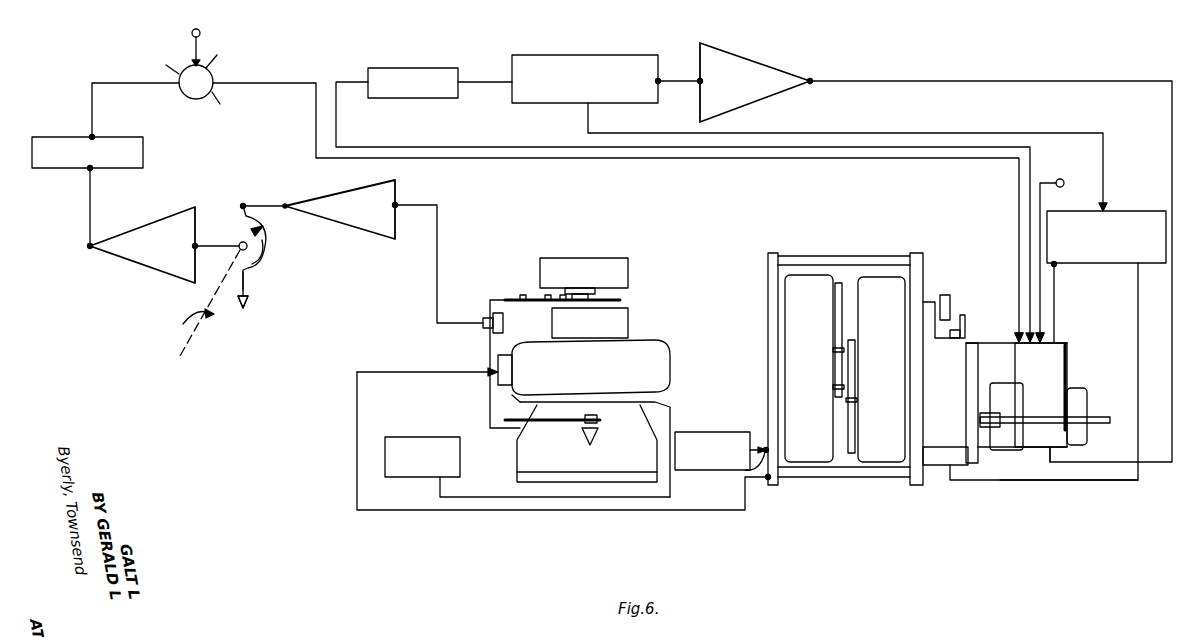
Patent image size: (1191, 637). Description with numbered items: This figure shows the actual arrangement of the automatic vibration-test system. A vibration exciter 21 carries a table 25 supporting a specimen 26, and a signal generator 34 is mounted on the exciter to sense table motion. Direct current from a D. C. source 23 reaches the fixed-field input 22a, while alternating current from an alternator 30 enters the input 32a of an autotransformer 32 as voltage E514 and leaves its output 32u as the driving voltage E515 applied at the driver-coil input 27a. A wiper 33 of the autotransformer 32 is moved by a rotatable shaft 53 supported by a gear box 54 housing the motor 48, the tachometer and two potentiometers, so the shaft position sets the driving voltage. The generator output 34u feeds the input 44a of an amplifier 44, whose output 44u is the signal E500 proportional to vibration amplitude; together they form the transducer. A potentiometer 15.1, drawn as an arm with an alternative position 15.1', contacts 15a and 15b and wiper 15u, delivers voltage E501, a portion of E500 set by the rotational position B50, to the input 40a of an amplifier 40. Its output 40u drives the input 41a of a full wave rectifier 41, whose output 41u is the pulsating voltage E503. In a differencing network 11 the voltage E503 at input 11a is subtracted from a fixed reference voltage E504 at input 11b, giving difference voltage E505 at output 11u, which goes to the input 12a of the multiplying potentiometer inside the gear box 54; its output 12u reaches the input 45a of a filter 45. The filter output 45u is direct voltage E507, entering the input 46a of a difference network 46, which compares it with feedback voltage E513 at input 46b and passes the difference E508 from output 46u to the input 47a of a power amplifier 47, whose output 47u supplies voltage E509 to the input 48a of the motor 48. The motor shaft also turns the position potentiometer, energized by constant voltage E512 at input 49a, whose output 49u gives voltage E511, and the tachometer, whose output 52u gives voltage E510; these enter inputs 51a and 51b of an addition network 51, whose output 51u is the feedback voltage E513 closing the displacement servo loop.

The differencing network 11 is at (190, 99).
The mixer input 11a is at (163, 64).
The mixer reference input 11b is at (221, 52).
The mixer output 11u is at (227, 105).
The full wave rectifier 41 is at (70, 170).
The rectifier input 41u is at (94, 135).
The rectifier output 41a is at (92, 170).
The amplifier 40 is at (140, 266).
The amplifier input 40u is at (87, 246).
The amplifier output 40a is at (196, 226).
The amplifier 44 is at (350, 226).
The amplifier input 44u is at (288, 203).
The amplifier output 44a is at (398, 200).
The filter 45 is at (427, 99).
The filter input 45a is at (368, 72).
The filter output 45u is at (458, 72).
The difference network 46 is at (600, 56).
The difference network input 46a is at (512, 70).
The input of difference network 46b is at (580, 105).
The difference network output 46u is at (659, 100).
The power amplifier 47 is at (751, 60).
The amplifier input 47a is at (699, 85).
The amplifier output 47u is at (812, 80).
The addition network 51 is at (1145, 211).
The addition network input 51u is at (1104, 208).
The addition network output 51a is at (1141, 265).
The addition network output 51b is at (1058, 266).
The switch arm 15a is at (250, 214).
The switch contact 15u is at (256, 250).
The potentiometer 15.1 is at (269, 284).
The switch position 15.1' is at (249, 200).
The switch contact 15b is at (212, 298).
The shaft rotational position B50 is at (202, 326).
The specimen 26 is at (598, 258).
The table 25 is at (606, 290).
The signal generator 34 is at (598, 300).
The coil terminal 34u is at (476, 314).
The vibration exciter 21 is at (672, 350).
The input of fixed field 22a is at (660, 400).
The input of driver coil 27a is at (488, 371).
The D. C. source 23 is at (440, 437).
The alternator 30 is at (716, 432).
The autotransformer 32 is at (862, 463).
The input of autotransformer 32a is at (770, 450).
The output of autotransformer 32u is at (769, 485).
The wiper 33 is at (852, 340).
The rotatable shaft 53 is at (855, 380).
The gear box 54 is at (966, 346).
The input of potentiometer 12a is at (1018, 334).
The output of potentiometer 12u is at (1040, 334).
The motor 49a is at (1046, 348).
The output of potentiometer 49u is at (1068, 344).
The motor 48 is at (1084, 394).
The input of motor 48a is at (1048, 459).
The output of tachometer 52u is at (947, 476).
The electric signal E500 is at (264, 199).
The signal E501 is at (213, 293).
The rectifier output voltage E503 is at (135, 102).
The fixed reference direct voltage E504 is at (192, 41).
The difference voltage E505 is at (618, 204).
The filter output direct voltage E507 is at (485, 74).
The difference voltage E508 is at (678, 75).
The signal E509 is at (991, 264).
The tachometer voltage E510 is at (1069, 488).
The potentiometer wiper voltage E511 is at (1070, 302).
The constant voltage E512 is at (1055, 252).
The feedback voltage E513 is at (847, 157).
The A. C. driving voltage E514 is at (735, 474).
The driving voltage E515 is at (562, 449).